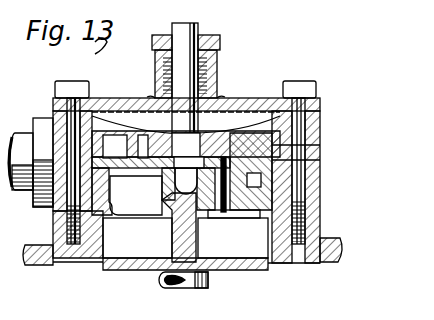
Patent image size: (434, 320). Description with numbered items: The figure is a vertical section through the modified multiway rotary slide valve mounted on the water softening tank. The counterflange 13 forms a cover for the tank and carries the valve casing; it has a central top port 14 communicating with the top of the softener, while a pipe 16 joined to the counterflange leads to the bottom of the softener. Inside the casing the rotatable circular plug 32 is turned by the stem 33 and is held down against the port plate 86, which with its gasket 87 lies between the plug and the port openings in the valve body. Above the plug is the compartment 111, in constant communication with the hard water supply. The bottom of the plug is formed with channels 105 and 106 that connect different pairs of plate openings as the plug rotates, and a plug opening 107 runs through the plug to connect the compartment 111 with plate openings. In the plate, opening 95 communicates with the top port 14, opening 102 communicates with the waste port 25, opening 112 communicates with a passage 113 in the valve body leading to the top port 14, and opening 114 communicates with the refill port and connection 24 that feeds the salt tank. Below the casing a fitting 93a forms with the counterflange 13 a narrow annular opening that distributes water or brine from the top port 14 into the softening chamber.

The counterflange 13 is at (318, 264).
The top port 14 is at (160, 227).
The pipe 16 is at (210, 281).
The refill port and connection 24 is at (308, 195).
The waste port 25 is at (188, 189).
The valve plug 32 is at (306, 142).
The stem 33 is at (200, 23).
The port plate 86 is at (306, 159).
The gasket 87 is at (261, 180).
The fitting 93a is at (160, 271).
The port plate opening 95 is at (127, 191).
The port plate opening 102 is at (161, 162).
The plug channel 105 is at (143, 135).
The plug channel 106 is at (186, 144).
The plug opening 107 is at (115, 146).
The compartment 111 is at (186, 122).
The plate opening 112 is at (232, 131).
The passage 113 is at (232, 218).
The plate opening 114 is at (318, 112).